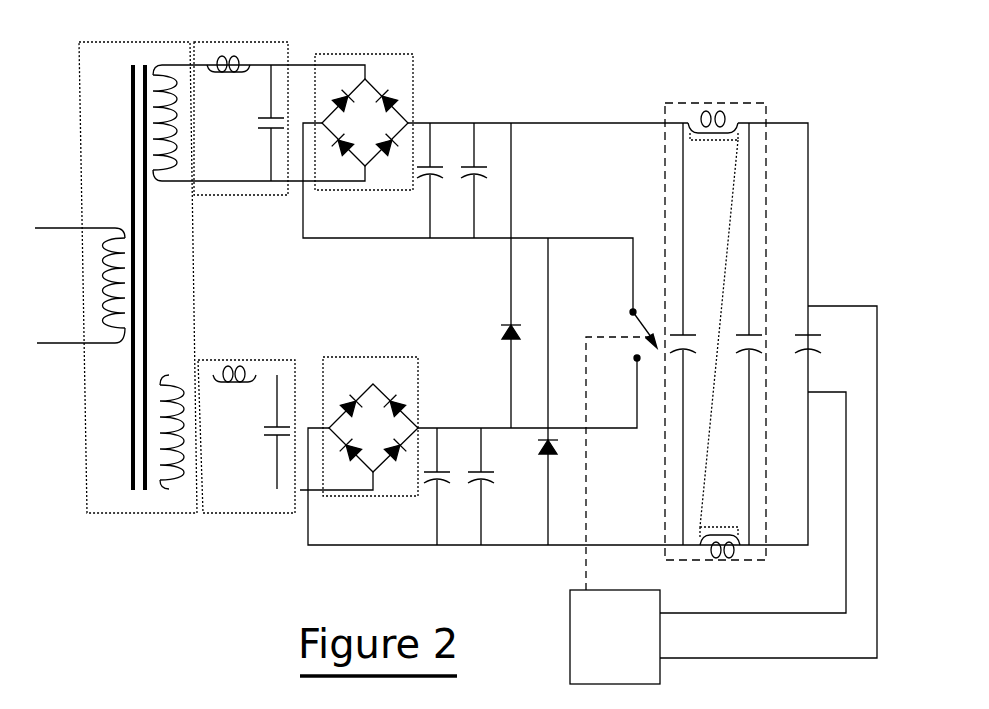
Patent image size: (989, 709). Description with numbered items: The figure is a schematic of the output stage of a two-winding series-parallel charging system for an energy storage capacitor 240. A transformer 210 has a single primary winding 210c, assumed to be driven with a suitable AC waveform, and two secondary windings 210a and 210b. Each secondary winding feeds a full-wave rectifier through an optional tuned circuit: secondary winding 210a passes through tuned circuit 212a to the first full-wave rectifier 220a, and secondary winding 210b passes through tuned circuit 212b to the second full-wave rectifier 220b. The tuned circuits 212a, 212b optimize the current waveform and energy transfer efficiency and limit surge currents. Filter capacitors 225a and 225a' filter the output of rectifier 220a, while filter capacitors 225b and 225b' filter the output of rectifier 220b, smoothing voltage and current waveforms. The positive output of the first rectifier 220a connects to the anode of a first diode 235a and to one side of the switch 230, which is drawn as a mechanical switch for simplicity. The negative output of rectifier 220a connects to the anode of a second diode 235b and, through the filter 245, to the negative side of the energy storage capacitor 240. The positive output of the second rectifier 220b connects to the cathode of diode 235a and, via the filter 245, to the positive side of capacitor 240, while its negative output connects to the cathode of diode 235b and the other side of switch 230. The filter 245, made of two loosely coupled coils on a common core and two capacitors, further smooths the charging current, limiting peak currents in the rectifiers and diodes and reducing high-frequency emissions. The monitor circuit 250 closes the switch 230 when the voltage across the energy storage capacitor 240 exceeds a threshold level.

The transformer 210 is at (152, 42).
The first secondary winding 210a is at (188, 373).
The second secondary winding 210b is at (183, 63).
The primary winding 210c is at (92, 227).
The first tuned circuit 212a is at (288, 360).
The second tuned circuit 212b is at (284, 42).
The first full-wave rectifier 220a is at (364, 356).
The second full-wave rectifier 220b is at (379, 53).
The filter capacitor 225a is at (415, 506).
The filter capacitor 225a' is at (458, 517).
The filter capacitor 225b is at (407, 201).
The filter capacitor 225b' is at (451, 213).
The switch 230 is at (633, 326).
The first diode 235a is at (500, 331).
The second diode 235b is at (560, 447).
The energy storage capacitor 240 is at (812, 350).
The filter 245 is at (708, 103).
The monitor circuit 250 is at (570, 640).